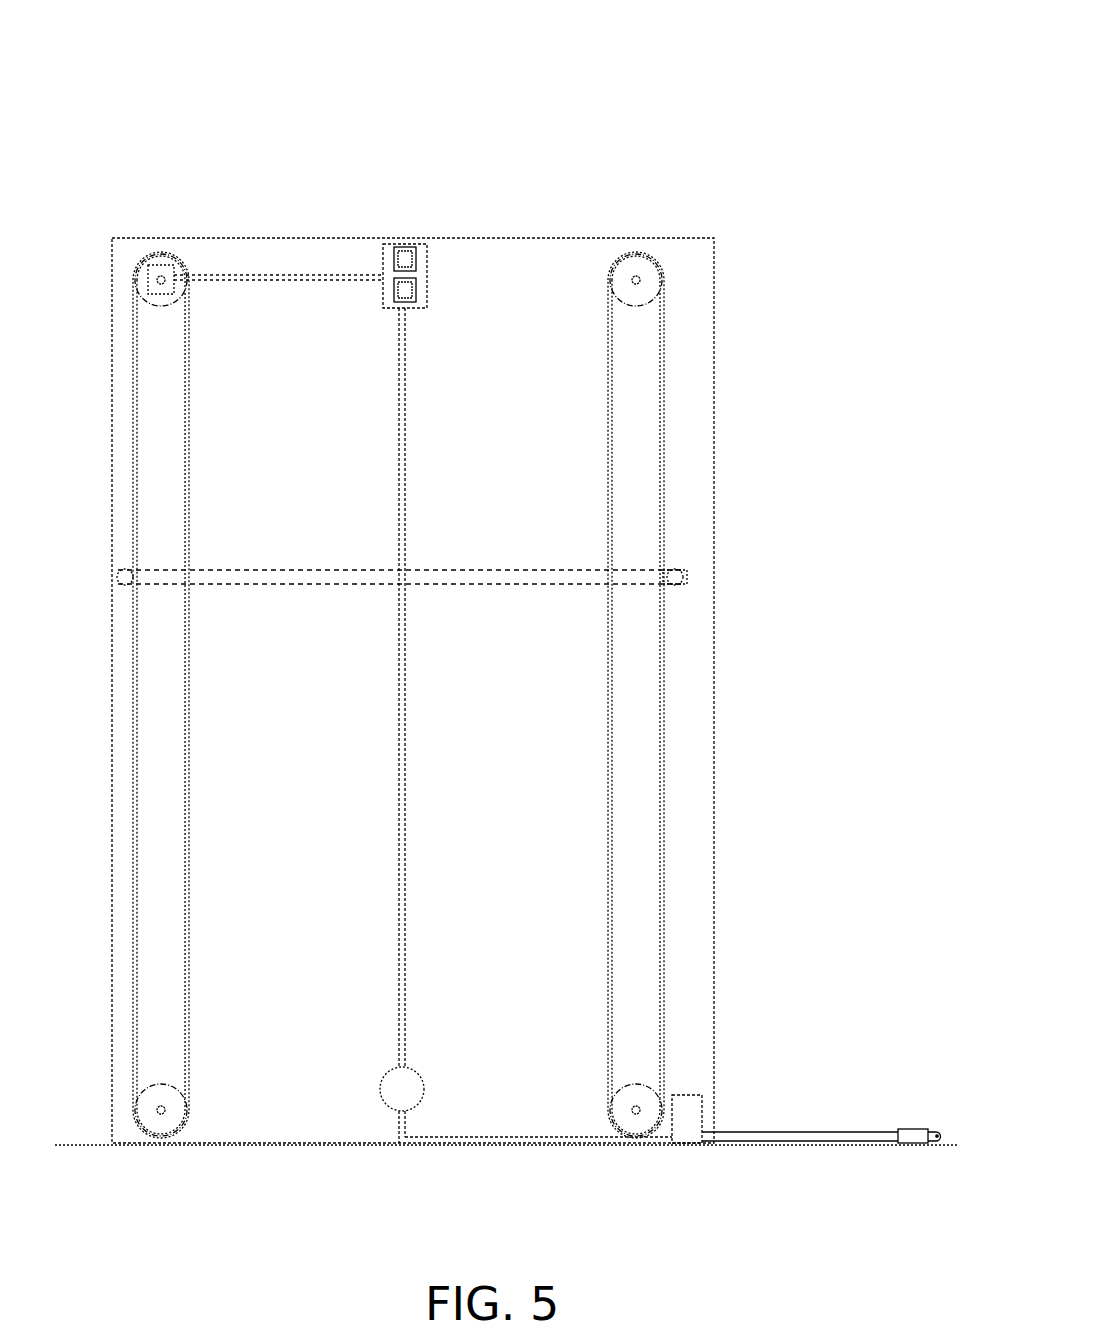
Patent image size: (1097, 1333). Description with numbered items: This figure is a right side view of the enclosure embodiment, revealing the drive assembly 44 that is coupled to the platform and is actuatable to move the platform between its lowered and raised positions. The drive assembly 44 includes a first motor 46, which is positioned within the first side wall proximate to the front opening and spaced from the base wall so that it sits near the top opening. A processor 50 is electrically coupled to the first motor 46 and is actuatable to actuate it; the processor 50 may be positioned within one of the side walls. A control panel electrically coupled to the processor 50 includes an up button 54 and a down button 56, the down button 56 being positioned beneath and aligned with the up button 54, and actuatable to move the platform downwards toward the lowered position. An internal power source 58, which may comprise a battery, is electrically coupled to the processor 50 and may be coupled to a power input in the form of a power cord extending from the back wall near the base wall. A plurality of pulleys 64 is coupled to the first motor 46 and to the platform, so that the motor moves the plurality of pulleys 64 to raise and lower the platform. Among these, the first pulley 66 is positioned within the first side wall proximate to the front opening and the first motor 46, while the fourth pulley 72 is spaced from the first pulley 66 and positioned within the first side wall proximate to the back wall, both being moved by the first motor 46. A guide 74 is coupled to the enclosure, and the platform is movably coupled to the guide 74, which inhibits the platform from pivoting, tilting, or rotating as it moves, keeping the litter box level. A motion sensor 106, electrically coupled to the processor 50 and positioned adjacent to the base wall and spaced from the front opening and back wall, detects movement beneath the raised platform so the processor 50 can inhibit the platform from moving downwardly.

The drive assembly 44 is at (641, 200).
The first motor 46 is at (174, 271).
The processor 50 is at (428, 270).
The up button 54 is at (408, 256).
The down button 56 is at (394, 288).
The internal power source 58 is at (703, 1118).
The plurality of pulleys 64 is at (110, 414).
The first pulley 66 is at (131, 325).
The fourth pulley 72 is at (664, 348).
The guide 74 is at (125, 628).
The motion sensor 106 is at (388, 1101).